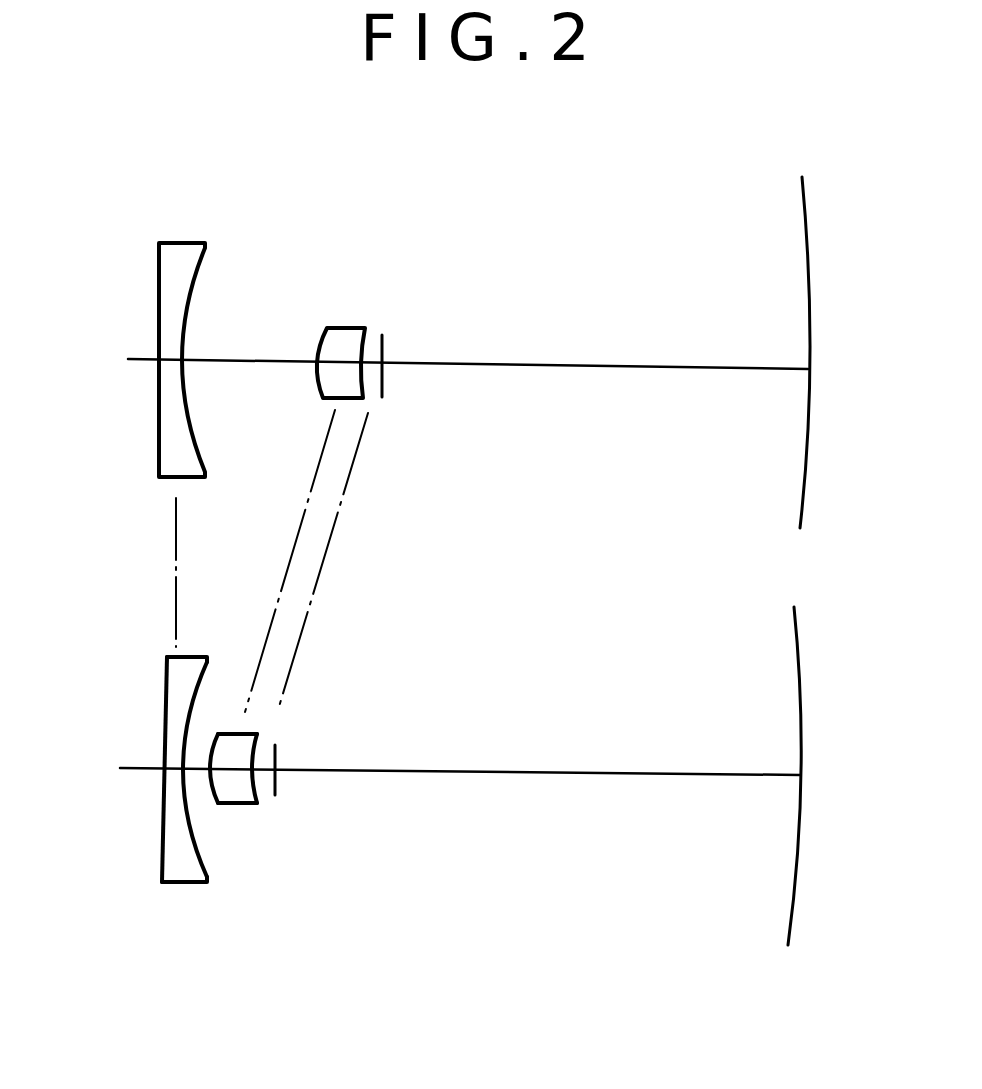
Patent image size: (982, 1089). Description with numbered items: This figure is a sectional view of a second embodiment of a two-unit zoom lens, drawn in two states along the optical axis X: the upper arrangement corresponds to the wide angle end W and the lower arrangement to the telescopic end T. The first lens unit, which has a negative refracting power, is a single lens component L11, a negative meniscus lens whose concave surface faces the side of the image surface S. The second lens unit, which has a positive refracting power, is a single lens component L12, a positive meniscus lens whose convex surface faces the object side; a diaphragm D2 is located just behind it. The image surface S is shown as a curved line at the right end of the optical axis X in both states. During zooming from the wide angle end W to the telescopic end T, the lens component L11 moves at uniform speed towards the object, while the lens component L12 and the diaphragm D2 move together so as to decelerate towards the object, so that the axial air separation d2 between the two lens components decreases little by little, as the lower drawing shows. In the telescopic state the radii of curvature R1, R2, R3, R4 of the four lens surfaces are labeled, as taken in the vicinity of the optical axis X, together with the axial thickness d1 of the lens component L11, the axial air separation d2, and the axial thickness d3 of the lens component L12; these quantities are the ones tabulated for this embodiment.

The lens component L11 is at (183, 247).
The lens component L12 is at (348, 327).
The diaphragm D2 is at (385, 343).
The optical axis X is at (583, 363).
The image surface S is at (807, 264).
The wide angle end W is at (73, 342).
The telescopic end T is at (72, 769).
The radius of curvature R1 is at (161, 838).
The radius of curvature R2 is at (200, 843).
The radius of curvature R3 is at (208, 797).
The radius of curvature R4 is at (253, 787).
The axial thickness d1 is at (172, 765).
The axial air separation d2 is at (197, 767).
The axial thickness d3 is at (233, 767).